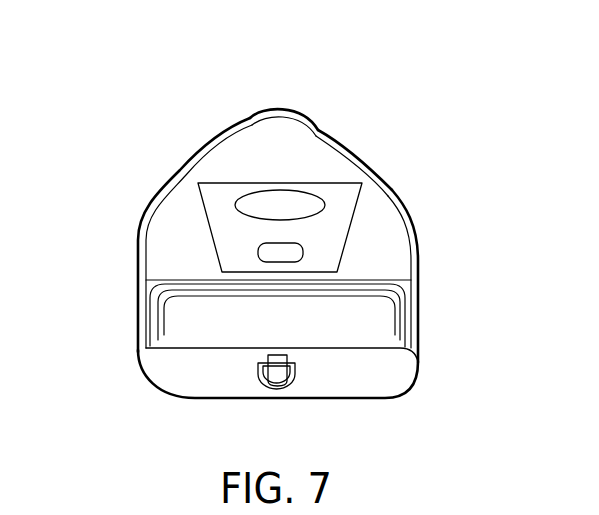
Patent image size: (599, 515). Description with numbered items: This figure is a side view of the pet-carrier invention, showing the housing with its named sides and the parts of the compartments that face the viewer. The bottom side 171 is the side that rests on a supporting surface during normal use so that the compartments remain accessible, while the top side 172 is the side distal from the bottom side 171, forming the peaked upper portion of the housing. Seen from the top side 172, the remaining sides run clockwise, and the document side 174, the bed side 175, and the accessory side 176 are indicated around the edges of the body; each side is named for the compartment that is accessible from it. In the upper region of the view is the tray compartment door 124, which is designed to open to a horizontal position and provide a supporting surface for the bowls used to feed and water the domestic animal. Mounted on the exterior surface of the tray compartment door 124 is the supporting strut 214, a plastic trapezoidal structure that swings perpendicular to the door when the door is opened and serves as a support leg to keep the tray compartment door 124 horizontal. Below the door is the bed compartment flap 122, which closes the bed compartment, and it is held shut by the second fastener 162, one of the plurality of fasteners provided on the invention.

The bed compartment flap 122 is at (367, 335).
The tray compartment door 124 is at (170, 219).
The second fastener 162 is at (402, 327).
The bottom side 171 is at (207, 398).
The top side 172 is at (291, 110).
The document side 174 is at (358, 161).
The bed side 175 is at (400, 237).
The accessory side 176 is at (137, 270).
The supporting strut 214 is at (347, 204).